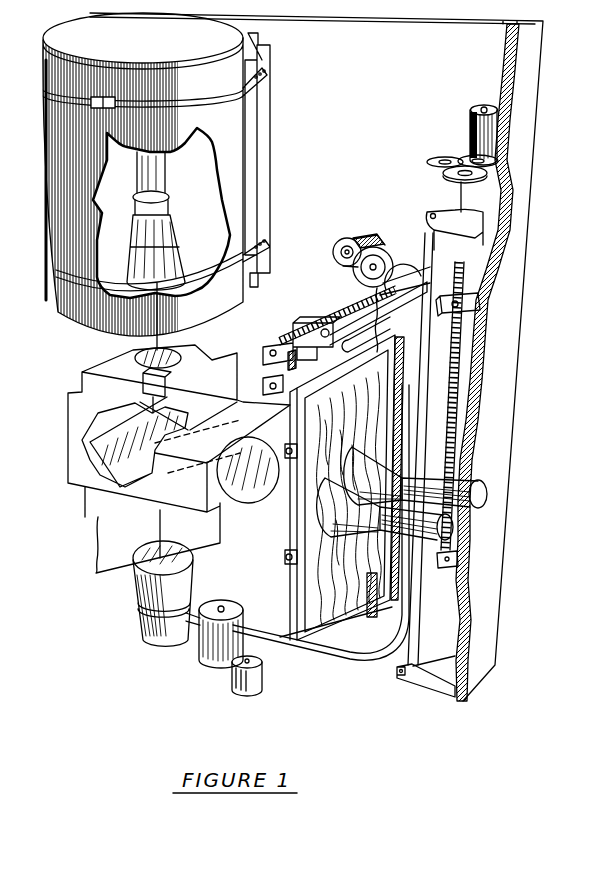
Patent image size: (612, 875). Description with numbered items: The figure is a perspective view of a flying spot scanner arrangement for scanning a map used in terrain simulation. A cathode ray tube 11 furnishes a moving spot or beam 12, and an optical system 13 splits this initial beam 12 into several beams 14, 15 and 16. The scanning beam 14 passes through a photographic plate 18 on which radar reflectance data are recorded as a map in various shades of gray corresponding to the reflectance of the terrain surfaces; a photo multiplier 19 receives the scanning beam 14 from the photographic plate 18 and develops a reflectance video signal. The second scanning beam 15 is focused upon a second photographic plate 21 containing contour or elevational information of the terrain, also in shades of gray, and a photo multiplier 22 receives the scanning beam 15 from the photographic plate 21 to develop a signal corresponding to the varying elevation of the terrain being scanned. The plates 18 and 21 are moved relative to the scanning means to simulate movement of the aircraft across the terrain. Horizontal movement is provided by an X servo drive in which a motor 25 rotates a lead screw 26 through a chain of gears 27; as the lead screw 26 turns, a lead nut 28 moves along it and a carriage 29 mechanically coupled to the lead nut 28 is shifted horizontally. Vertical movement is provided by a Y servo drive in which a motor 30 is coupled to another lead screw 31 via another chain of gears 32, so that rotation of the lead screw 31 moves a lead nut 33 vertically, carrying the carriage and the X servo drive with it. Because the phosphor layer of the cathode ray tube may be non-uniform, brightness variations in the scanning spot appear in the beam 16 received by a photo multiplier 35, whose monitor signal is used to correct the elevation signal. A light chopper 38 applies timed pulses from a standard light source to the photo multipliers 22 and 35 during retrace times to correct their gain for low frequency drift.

The cathode ray tube 11 is at (180, 142).
The beam 12 is at (160, 305).
The optical system 13 is at (85, 378).
The scanning beam 14 is at (265, 441).
The second scanning beam 15 is at (262, 492).
The beam 16 is at (160, 533).
The photographic plate 18 is at (391, 352).
The photo multiplier 19 is at (400, 468).
The second photographic plate 21 is at (305, 600).
The photo multiplier 22 is at (440, 566).
The motor 25 is at (370, 238).
The lead screw 26 is at (333, 321).
The chain of gears 27 is at (362, 285).
The lead nut 28 is at (296, 340).
The carriage 29 is at (288, 545).
The motor 30 is at (475, 142).
The lead screw 31 is at (465, 270).
The chain of gears 32 is at (442, 160).
The lead nut 33 is at (470, 318).
The photo multiplier 35 is at (150, 621).
The light chopper 38 is at (226, 687).